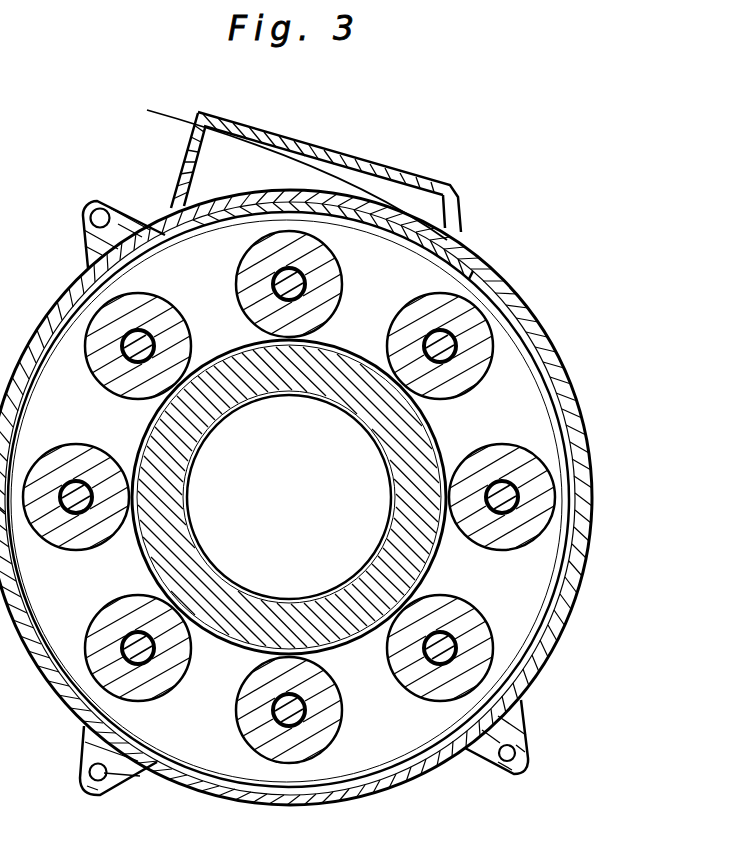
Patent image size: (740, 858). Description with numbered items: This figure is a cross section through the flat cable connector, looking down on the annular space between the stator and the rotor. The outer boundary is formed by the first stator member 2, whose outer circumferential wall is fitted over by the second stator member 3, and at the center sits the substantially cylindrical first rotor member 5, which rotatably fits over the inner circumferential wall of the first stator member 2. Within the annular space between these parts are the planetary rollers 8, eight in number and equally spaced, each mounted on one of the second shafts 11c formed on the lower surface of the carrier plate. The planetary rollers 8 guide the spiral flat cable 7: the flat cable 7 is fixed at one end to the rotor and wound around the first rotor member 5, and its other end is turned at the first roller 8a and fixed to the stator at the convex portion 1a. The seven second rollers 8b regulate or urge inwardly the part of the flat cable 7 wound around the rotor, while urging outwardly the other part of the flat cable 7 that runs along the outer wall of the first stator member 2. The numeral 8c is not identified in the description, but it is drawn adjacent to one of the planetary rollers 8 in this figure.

The first stator member 2 is at (575, 472).
The convex portion 1a is at (433, 178).
The spiral flat cable 7 is at (160, 113).
The second stator member 3 is at (570, 393).
The first rotor member 5 is at (240, 623).
The planetary rollers 8 is at (342, 527).
The first roller 8a is at (509, 447).
The second rollers 8b is at (514, 527).
The outer sleeve 8c is at (410, 695).
The second shafts 11c is at (440, 345).